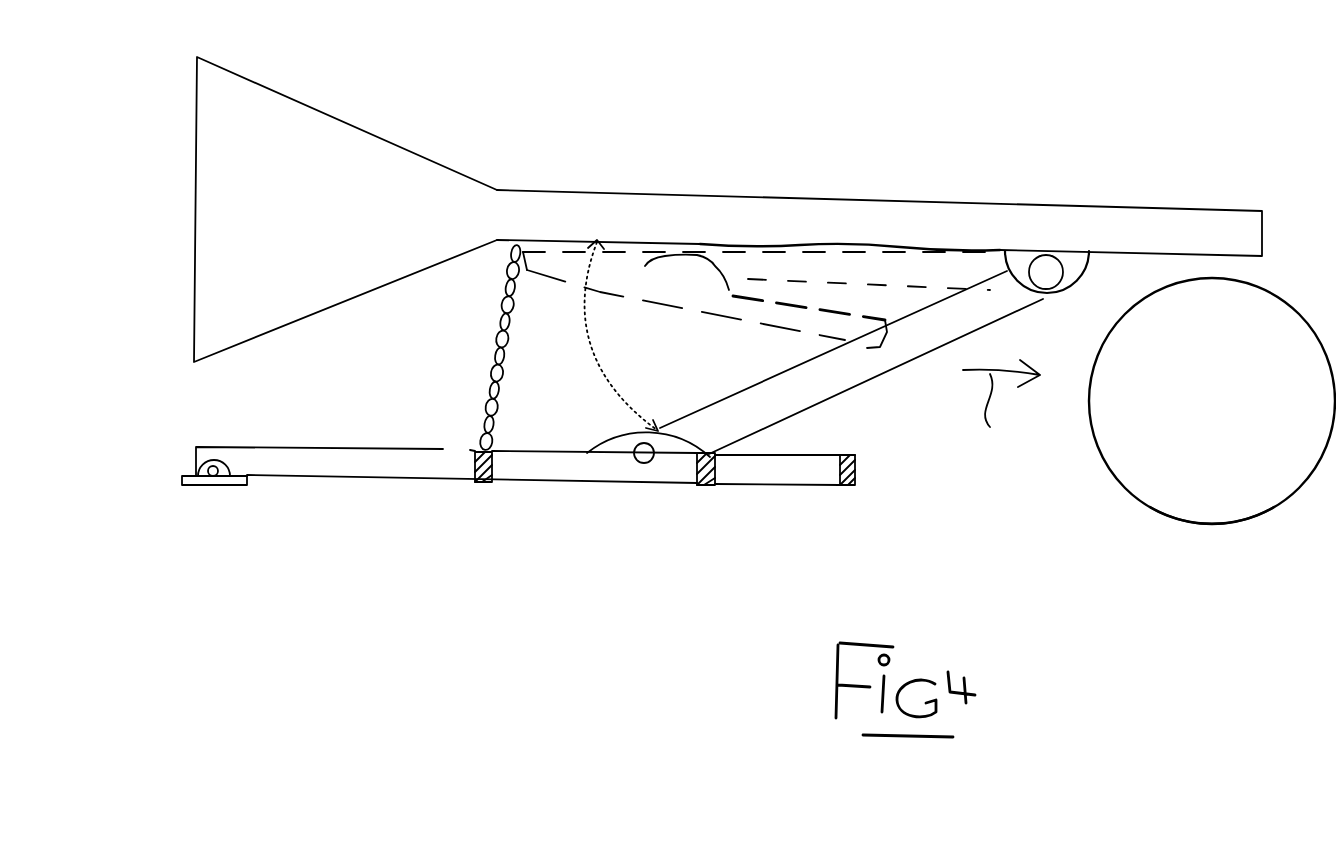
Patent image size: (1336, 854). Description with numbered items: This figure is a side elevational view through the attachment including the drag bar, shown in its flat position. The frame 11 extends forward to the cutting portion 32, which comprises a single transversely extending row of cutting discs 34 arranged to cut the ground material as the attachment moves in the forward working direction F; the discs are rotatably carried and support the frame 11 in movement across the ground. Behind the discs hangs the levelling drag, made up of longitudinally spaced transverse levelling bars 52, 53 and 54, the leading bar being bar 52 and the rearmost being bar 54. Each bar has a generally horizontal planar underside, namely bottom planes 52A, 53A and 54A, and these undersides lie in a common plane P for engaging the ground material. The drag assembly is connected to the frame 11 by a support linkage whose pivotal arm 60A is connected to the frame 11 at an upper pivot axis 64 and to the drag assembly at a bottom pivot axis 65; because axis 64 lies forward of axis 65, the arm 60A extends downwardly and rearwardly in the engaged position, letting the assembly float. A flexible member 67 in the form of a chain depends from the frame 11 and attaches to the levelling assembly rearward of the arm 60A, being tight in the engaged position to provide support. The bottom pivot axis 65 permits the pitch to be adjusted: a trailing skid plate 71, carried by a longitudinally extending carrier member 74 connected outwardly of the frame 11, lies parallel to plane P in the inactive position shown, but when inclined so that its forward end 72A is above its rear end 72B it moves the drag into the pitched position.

The frame 11 is at (852, 190).
The flexible members 67 is at (495, 276).
The pivot axis 64 is at (1044, 256).
The arm 60A is at (860, 382).
The pivot axis 65 is at (647, 463).
The carrier member 74 is at (293, 468).
The common plane P is at (563, 487).
The rear end 72B is at (177, 480).
The forward end 72A is at (252, 485).
The trailing skid plate 71 is at (218, 487).
The levelling bar 54 is at (463, 466).
The bottom plane 54A is at (482, 484).
The levelling bar 53 is at (713, 455).
The bottom plane 53A is at (703, 485).
The levelling bar 52 is at (855, 468).
The bottom plane 52A is at (847, 485).
The forward working direction F is at (1001, 418).
The cutting discs 34 is at (1127, 493).
The cutting portion 32 is at (1187, 536).